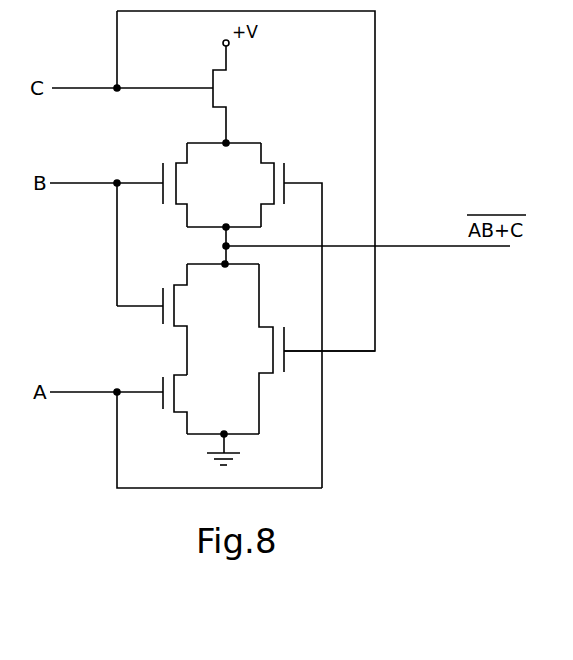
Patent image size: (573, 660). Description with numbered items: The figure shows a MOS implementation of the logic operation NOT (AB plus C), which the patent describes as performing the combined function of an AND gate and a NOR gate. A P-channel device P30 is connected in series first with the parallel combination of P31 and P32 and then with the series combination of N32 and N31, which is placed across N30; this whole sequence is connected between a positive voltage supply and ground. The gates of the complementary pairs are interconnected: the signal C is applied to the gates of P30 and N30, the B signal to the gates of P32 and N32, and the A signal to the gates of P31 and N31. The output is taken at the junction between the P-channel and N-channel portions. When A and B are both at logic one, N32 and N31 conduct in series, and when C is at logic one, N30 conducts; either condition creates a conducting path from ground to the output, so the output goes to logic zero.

The P-channel MOS device P30 is at (235, 94).
The P-channel MOS device P31 is at (279, 315).
The P-channel MOS device P32 is at (169, 185).
The N-channel MOS device N30 is at (299, 349).
The N-channel MOS device N31 is at (169, 404).
The N-channel MOS device N32 is at (169, 319).